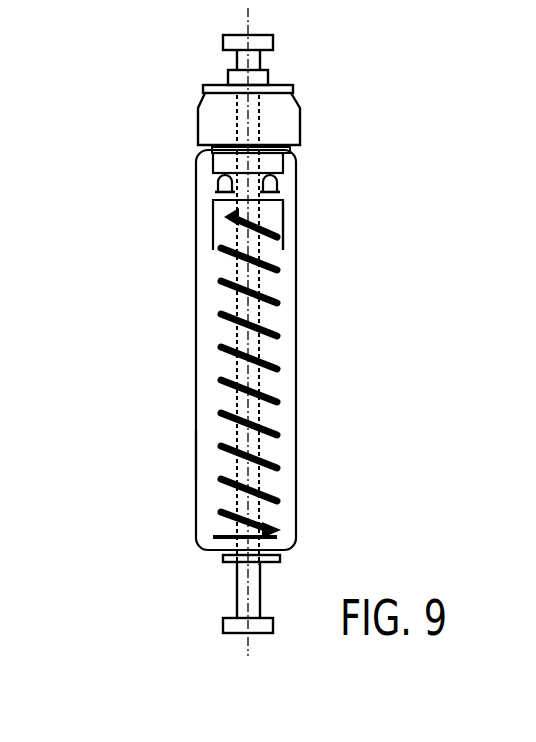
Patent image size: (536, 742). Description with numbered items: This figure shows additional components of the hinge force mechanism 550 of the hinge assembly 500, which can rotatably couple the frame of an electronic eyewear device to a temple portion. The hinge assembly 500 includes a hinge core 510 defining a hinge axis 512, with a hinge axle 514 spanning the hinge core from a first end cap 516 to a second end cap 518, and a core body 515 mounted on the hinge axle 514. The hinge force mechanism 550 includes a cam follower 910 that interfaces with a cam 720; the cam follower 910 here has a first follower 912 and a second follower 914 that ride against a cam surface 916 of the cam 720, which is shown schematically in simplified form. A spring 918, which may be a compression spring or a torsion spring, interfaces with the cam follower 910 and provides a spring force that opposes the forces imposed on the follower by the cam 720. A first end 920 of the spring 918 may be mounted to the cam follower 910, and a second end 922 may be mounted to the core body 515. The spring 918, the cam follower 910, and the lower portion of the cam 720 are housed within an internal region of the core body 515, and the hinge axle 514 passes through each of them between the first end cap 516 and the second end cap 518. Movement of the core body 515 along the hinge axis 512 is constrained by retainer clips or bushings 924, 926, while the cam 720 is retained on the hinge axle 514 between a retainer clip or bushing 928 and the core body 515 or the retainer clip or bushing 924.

The hinge assembly 500 is at (382, 130).
The hinge core 510 is at (179, 291).
The hinge axis 512 is at (248, 345).
The hinge axle 514 is at (252, 63).
The core body 515 is at (196, 457).
The first end cap 516 is at (265, 43).
The second end cap 518 is at (225, 627).
The hinge force mechanism 550 is at (191, 66).
The cam 720 is at (218, 128).
The cam follower 910 is at (213, 205).
The first follower 912 is at (218, 183).
The second follower 914 is at (278, 185).
The cam surface 916 is at (250, 184).
The spring 918 is at (265, 255).
The first end of spring 920 is at (313, 230).
The second end of spring 922 is at (314, 492).
The retainer clip or bushing 924 is at (290, 150).
The retainer clip or bushing 926 is at (223, 560).
The retainer clip or bushing 928 is at (293, 88).